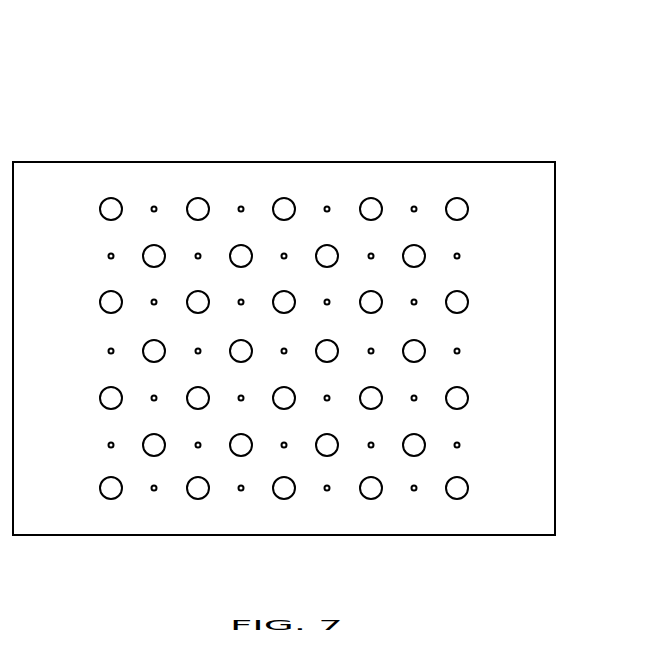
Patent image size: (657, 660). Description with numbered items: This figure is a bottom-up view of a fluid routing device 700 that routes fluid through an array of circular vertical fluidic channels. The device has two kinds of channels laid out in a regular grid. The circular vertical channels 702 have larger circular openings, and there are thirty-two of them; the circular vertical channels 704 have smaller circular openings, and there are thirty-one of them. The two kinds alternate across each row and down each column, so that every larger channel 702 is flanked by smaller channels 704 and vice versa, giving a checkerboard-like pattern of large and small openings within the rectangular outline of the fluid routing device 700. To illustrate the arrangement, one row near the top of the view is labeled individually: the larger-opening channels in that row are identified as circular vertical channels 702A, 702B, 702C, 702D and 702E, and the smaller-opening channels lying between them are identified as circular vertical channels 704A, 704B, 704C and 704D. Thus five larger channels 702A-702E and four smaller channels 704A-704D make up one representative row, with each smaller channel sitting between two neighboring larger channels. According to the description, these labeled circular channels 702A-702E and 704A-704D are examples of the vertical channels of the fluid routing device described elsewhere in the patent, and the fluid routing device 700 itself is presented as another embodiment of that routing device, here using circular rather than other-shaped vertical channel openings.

The fluid routing device 700 is at (477, 162).
The circular vertical channels 702 is at (462, 292).
The circular vertical channel 702A is at (112, 198).
The circular vertical channel 702B is at (199, 198).
The circular vertical channel 702C is at (285, 198).
The circular vertical channel 702D is at (372, 198).
The circular vertical channel 702E is at (458, 198).
The circular vertical channels 704 is at (199, 347).
The circular vertical channel 704A is at (155, 212).
The circular vertical channel 704B is at (242, 212).
The circular vertical channel 704C is at (328, 212).
The circular vertical channel 704D is at (415, 212).